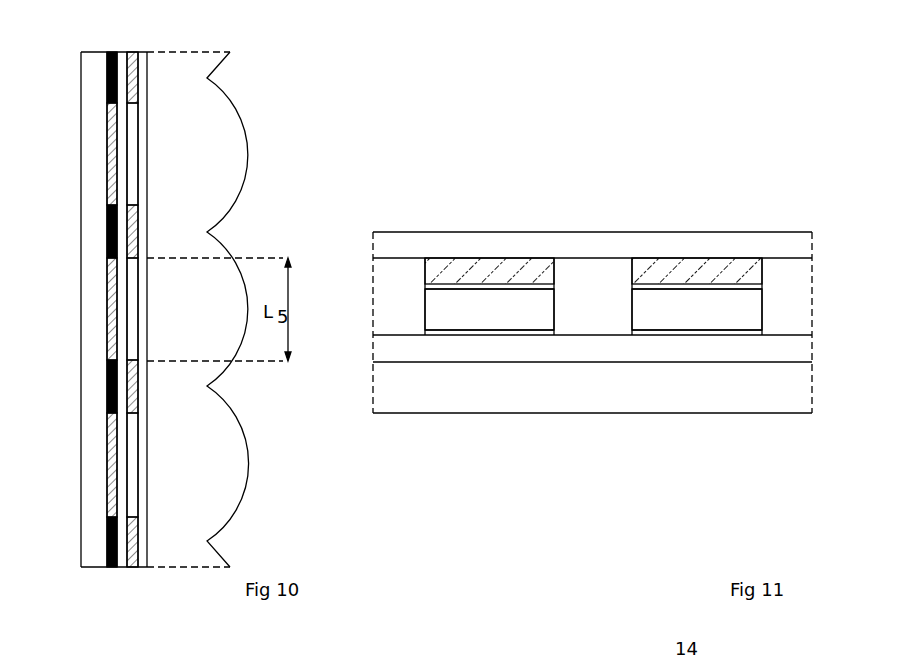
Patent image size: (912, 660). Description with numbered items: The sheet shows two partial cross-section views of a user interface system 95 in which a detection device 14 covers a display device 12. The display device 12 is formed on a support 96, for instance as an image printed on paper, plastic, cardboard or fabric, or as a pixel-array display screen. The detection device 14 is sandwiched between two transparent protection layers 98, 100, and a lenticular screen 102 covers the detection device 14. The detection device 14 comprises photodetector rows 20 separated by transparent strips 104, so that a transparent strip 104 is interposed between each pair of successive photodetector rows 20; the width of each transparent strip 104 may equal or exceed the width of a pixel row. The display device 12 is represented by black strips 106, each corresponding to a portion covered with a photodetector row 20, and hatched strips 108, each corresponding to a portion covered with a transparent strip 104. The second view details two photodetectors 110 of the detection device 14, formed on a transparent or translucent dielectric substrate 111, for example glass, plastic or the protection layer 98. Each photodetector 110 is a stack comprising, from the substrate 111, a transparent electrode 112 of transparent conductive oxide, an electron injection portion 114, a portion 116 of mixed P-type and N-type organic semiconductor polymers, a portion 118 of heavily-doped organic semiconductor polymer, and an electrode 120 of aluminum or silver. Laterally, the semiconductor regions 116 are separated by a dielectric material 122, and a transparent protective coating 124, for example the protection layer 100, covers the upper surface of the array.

In FIG. 10, the display device 12 is at (99, 497).
In FIG. 10, the detection device 14 is at (143, 488).
In FIG. 11, the detection device 14 is at (708, 146).
In FIG. 10, the photodetector rows 20 is at (137, 70).
In FIG. 10, the user interface system 95 is at (254, 86).
In FIG. 10, the support 96 is at (91, 530).
In FIG. 10, the transparent protection layer 98 is at (122, 561).
In FIG. 10, the transparent protection layer 100 is at (142, 563).
In FIG. 10, the lenticular screen 102 is at (222, 492).
In FIG. 10, the transparent strips 104 is at (132, 145).
In FIG. 10, the black strips 106 is at (107, 77).
In FIG. 10, the hatched strips 108 is at (112, 150).
In FIG. 11, the photodetectors 110 is at (500, 221).
In FIG. 11, the substrate 111 is at (592, 393).
In FIG. 11, the transparent electrode 112 is at (397, 350).
In FIG. 11, the electron injection portion 114 is at (425, 330).
In FIG. 11, the semiconductor portion 116 is at (440, 301).
In FIG. 11, the heavily-doped organic semiconductor polymer portion 118 is at (440, 284).
In FIG. 11, the electrode 120 is at (458, 265).
In FIG. 11, the dielectric material 122 is at (587, 270).
In FIG. 11, the transparent protective coating 124 is at (775, 240).